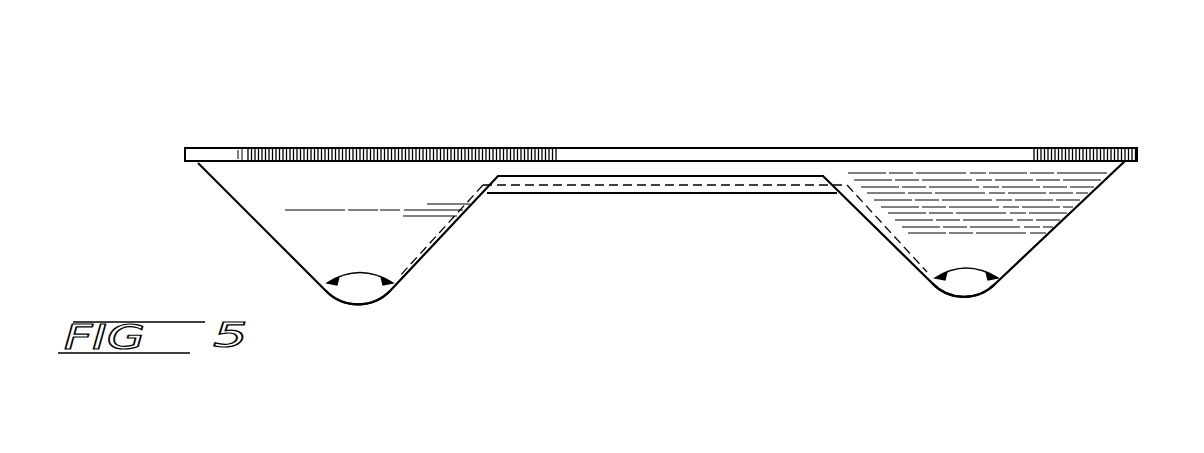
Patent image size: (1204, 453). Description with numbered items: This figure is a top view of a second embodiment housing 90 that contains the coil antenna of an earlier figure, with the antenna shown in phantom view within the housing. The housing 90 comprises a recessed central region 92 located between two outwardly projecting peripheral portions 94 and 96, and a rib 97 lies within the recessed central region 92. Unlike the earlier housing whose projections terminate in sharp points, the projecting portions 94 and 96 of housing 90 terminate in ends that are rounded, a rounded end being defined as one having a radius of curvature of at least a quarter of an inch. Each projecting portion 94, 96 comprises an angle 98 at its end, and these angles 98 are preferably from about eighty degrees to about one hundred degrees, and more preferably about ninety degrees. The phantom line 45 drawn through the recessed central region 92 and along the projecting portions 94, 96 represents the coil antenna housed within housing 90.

The housing 90 is at (1072, 85).
The recessed central region 92 is at (655, 214).
The outwardly projecting peripheral portion 94 is at (368, 342).
The outwardly projecting peripheral portion 96 is at (983, 340).
The rib 97 is at (725, 195).
The angle 98 is at (370, 271).
The sheet centerline 45 is at (622, 183).